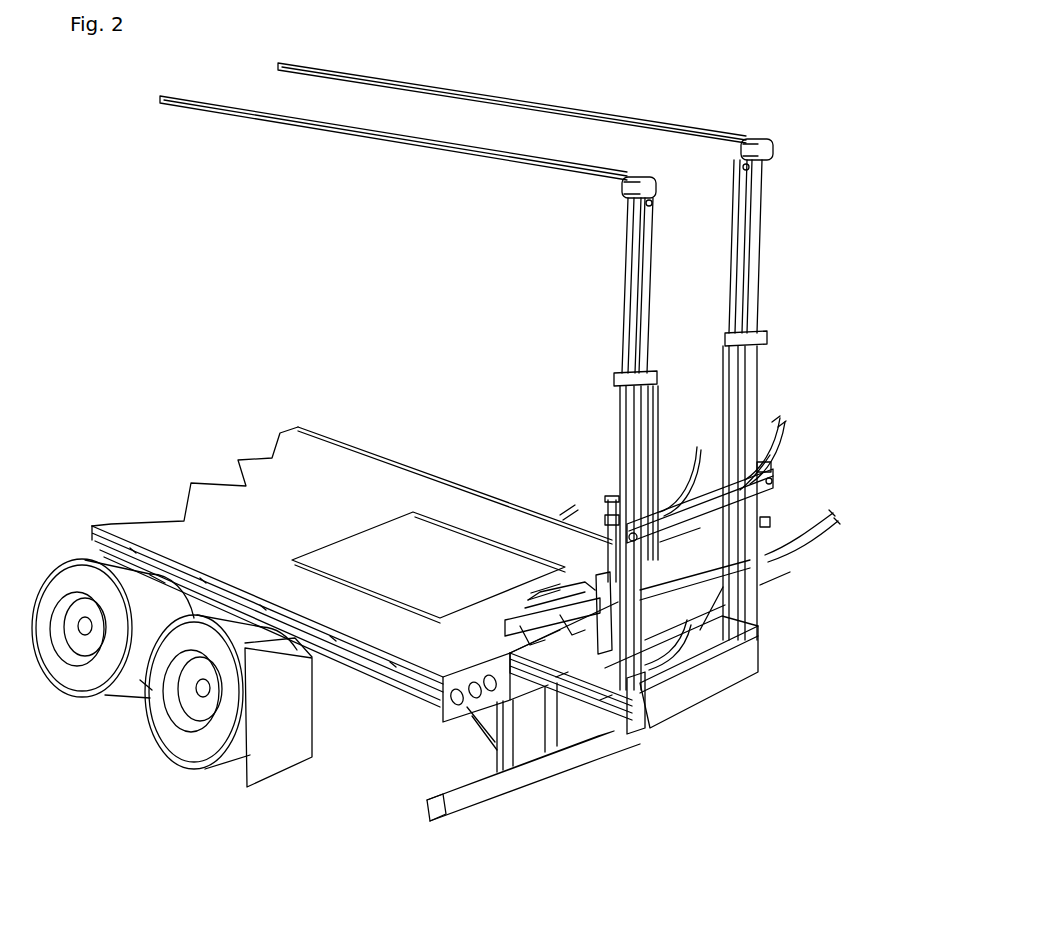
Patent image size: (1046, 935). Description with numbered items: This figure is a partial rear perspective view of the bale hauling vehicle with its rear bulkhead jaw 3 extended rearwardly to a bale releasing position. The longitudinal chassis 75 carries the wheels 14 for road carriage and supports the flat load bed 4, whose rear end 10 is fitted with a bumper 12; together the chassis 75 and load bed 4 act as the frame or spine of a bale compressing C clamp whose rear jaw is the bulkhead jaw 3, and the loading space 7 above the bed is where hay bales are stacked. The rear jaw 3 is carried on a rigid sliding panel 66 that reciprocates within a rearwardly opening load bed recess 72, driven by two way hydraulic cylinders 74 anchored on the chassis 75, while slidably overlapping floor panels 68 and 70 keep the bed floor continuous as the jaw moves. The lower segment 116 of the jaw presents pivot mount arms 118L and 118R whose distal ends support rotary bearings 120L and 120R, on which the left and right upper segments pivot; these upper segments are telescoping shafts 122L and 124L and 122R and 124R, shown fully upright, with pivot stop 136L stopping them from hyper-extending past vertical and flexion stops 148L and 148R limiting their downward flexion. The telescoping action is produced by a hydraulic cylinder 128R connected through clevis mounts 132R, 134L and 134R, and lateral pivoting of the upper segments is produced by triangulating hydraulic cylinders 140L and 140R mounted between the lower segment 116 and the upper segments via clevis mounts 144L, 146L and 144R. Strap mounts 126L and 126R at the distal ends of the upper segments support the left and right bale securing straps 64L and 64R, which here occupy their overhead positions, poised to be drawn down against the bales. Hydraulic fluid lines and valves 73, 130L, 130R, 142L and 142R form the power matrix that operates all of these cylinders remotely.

The rear bulkhead jaw 3 is at (596, 434).
The load bed 4 is at (325, 455).
The loading space 7 is at (363, 323).
The rear end 10 is at (505, 678).
The bumper 12 is at (512, 770).
The wheels 14 is at (206, 750).
The left bale securing strap 64L is at (400, 145).
The right bale securing strap 64R is at (497, 93).
The sliding panel 66 is at (618, 715).
The floor panel 68 is at (530, 600).
The floor panel 70 is at (385, 540).
The load bed recess 72 is at (548, 687).
The hydraulic fluid lines and valves 73 is at (545, 625).
The two way hydraulic cylinders 74 is at (530, 645).
The chassis 75 is at (478, 720).
The rear bulkhead jaw lower segment 116 is at (752, 610).
The left pivot mount arm 118L is at (680, 537).
The right pivot mount arm 118R is at (776, 492).
The left rotary bearing 120L is at (598, 512).
The right rotary bearing 120R is at (776, 480).
The left telescoping shaft 122L is at (612, 402).
The right telescoping shaft 122R is at (758, 362).
The left telescoping shaft 124L is at (630, 287).
The right telescoping shaft 124R is at (763, 205).
The left strap mount 126L is at (622, 188).
The right strap mount 126R is at (753, 138).
The right hydraulic cylinder 128R is at (728, 362).
The left hydraulic fluid line 130L is at (656, 425).
The right hydraulic fluid line 130R is at (775, 422).
The right clevis mount 132R is at (764, 521).
The left clevis mount 134L is at (654, 200).
The right clevis mount 134R is at (740, 170).
The left pivot stop 136L is at (641, 698).
The left triangulating hydraulic cylinder 140L is at (565, 515).
The right triangulating hydraulic cylinder 140R is at (772, 455).
The left hydraulic fluid line 142L is at (700, 663).
The right hydraulic fluid line 142R is at (832, 512).
The left clevis mount 144L is at (610, 501).
The right clevis mount 144R is at (763, 400).
The left clevis mount 146L is at (607, 700).
The left flexion stop 148L is at (562, 677).
The right flexion stop 148R is at (790, 572).